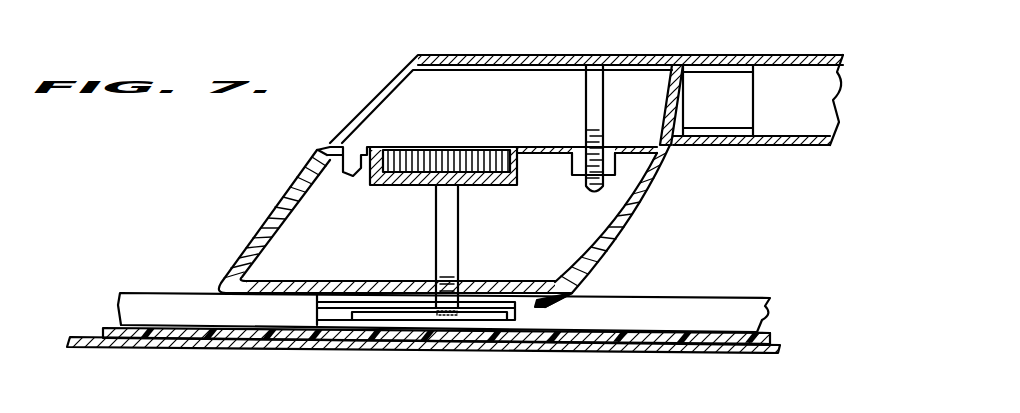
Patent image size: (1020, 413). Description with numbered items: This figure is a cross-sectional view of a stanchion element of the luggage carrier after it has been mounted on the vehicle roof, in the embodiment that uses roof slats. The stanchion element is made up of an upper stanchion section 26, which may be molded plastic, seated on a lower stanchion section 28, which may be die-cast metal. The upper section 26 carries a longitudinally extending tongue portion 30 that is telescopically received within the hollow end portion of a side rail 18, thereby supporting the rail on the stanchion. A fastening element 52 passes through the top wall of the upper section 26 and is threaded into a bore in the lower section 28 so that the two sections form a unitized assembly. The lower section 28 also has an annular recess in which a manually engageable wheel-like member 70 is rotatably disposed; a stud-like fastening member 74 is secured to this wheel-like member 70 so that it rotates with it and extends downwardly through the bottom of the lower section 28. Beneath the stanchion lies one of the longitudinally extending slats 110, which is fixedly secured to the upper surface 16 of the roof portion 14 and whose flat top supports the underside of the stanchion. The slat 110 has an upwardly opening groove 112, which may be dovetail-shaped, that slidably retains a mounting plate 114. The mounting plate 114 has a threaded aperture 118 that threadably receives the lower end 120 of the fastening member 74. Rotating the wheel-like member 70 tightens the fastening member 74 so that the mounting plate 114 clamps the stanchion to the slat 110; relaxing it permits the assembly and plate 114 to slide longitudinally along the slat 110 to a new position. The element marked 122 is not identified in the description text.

The roof portion 14 is at (765, 352).
The upper surface 16 is at (685, 338).
The side rails 18 is at (808, 54).
The upper stanchion section 26 is at (528, 55).
The lower stanchion section 28 is at (262, 212).
The longitudinally extending tongue portion 30 is at (748, 104).
The fastening element 52 is at (586, 102).
The wheel-like member 70 is at (462, 147).
The stud-like fastening member 74 is at (461, 223).
The slats 110 is at (725, 296).
The grooves 112 is at (550, 305).
The mounting plates 114 is at (507, 321).
The threaded aperture 118 is at (421, 342).
The lower end of fastening member 120 is at (468, 292).
The end seal 122 is at (765, 336).